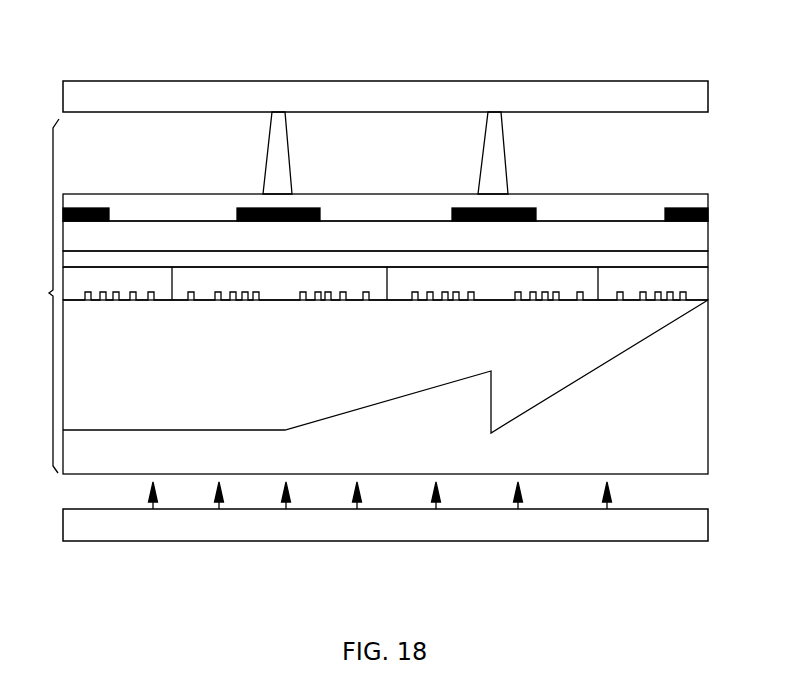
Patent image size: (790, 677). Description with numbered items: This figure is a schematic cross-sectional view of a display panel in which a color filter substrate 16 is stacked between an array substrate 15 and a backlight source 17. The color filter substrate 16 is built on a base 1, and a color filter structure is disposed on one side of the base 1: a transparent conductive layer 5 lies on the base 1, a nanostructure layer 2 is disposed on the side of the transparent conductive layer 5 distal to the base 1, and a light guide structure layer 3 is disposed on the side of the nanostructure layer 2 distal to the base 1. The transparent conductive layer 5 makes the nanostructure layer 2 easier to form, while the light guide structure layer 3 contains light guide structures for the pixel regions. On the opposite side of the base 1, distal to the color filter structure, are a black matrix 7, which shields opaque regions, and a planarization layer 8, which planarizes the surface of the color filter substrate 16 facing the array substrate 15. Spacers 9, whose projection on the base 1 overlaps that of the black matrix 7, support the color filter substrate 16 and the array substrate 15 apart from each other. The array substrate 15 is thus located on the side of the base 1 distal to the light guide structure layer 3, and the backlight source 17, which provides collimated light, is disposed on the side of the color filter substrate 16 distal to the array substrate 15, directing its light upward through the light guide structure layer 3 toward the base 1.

The base 1 is at (690, 236).
The nanostructure layer 2 is at (695, 280).
The light guide structure layer 3 is at (685, 403).
The transparent conductive layer 5 is at (72, 258).
The black matrix 7 is at (406, 206).
The planarization layer 8 is at (585, 208).
The spacer 9 is at (280, 157).
The array substrate 15 is at (630, 98).
The color filter substrate 16 is at (42, 296).
The backlight source 17 is at (646, 525).